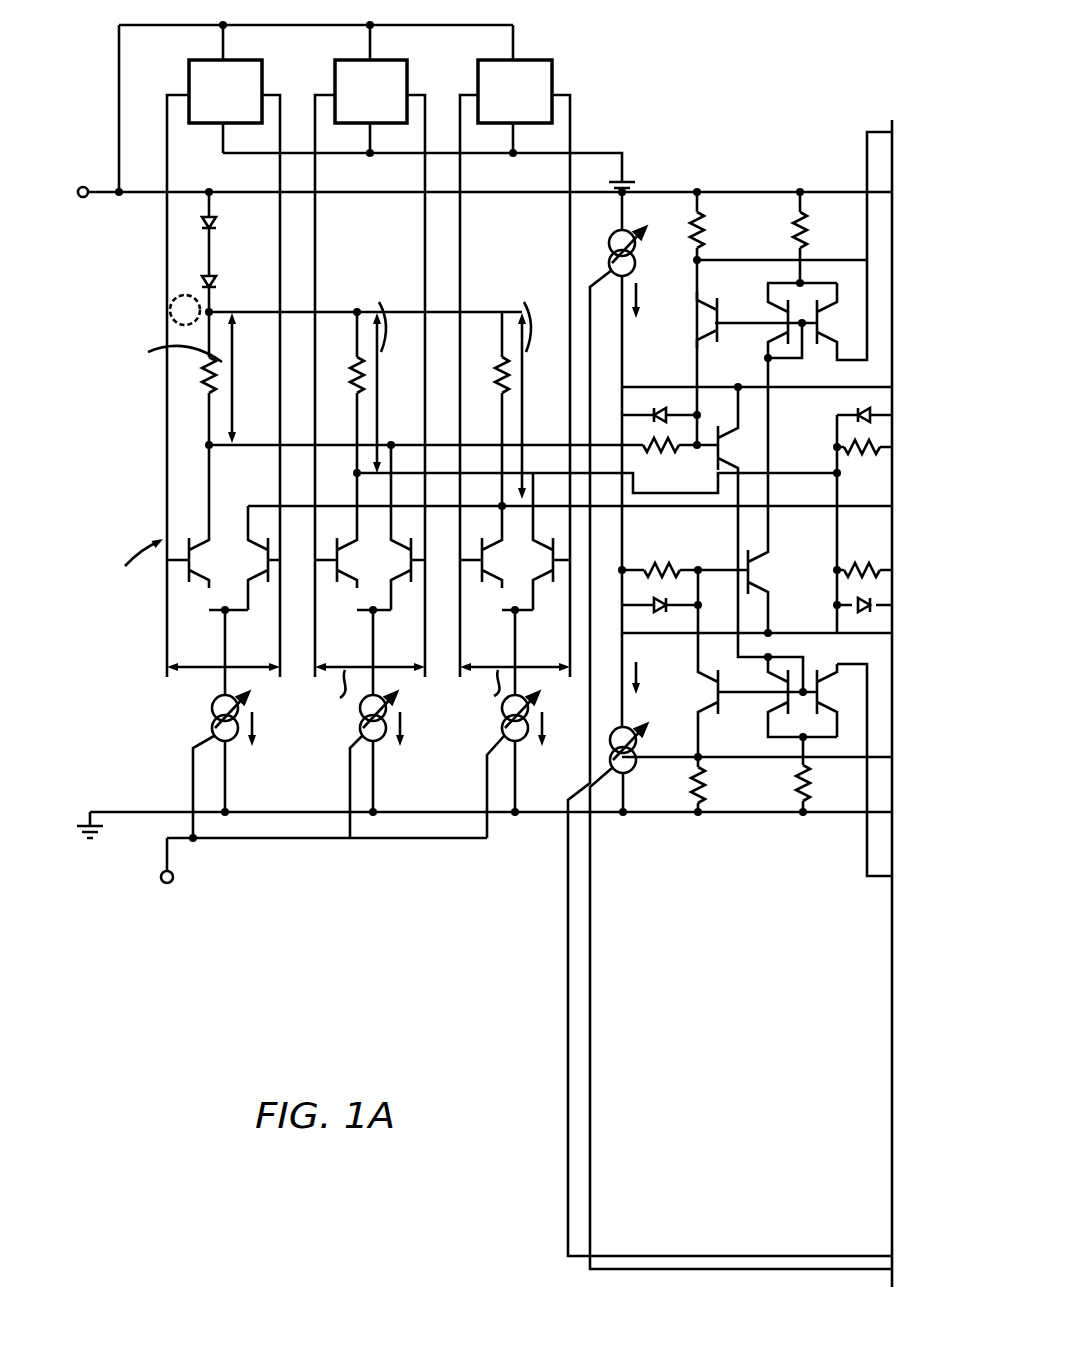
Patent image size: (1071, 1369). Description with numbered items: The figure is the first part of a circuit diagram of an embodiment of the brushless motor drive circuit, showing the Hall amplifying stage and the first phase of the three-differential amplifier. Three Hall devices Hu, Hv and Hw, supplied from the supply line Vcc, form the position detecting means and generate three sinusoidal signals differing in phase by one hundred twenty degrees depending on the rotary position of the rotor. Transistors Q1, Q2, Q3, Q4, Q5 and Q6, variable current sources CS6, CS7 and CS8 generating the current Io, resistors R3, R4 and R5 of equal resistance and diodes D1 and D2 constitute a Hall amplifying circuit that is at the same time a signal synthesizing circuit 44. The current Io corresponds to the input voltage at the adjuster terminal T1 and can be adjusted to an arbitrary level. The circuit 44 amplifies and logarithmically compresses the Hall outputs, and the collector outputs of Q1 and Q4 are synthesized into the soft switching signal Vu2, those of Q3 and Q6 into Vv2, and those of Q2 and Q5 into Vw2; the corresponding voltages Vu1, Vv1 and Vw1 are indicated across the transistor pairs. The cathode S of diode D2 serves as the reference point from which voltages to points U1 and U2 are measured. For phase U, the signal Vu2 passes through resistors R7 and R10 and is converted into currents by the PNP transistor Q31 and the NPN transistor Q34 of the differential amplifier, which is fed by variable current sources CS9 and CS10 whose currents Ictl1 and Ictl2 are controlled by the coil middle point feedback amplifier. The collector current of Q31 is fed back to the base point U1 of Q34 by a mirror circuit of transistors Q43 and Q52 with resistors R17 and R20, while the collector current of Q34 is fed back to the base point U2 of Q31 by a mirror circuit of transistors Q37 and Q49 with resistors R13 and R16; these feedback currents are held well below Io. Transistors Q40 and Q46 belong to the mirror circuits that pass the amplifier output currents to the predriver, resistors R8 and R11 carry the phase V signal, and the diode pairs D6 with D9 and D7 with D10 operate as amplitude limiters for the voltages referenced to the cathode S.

The supply voltage terminal Vcc is at (76, 175).
The Hall device Hu is at (225, 91).
The Hall device Hv is at (371, 91).
The Hall device Hw is at (515, 91).
The diode D1 is at (228, 234).
The diode D2 is at (230, 292).
The cathode of the diode D2 S is at (185, 310).
The resistor R3 is at (193, 422).
The resistor R4 is at (341, 422).
The resistor R5 is at (486, 422).
The soft switching signal Vu2 is at (164, 378).
The soft switching signal Vv2 is at (366, 373).
The soft switching signal Vw2 is at (520, 386).
The U phase voltage Vu1 is at (223, 651).
The V phase voltage Vv1 is at (357, 689).
The W phase voltage Vw1 is at (504, 688).
The transistor Q1 is at (190, 548).
The transistor Q2 is at (246, 560).
The transistor Q3 is at (337, 548).
The transistor Q4 is at (391, 560).
The transistor Q5 is at (484, 551).
The transistor Q6 is at (537, 560).
The signal synthesizing circuit 44 is at (125, 561).
The variable current source CS6 is at (238, 724).
The variable current source CS7 is at (391, 724).
The variable current source CS8 is at (528, 724).
The variable current source CS9 is at (609, 459).
The variable current source CS10 is at (652, 768).
The electric current Io is at (412, 730).
The adjuster terminal T1 is at (166, 900).
The current Ictl1 is at (665, 302).
The current Ictl2 is at (662, 681).
The resistor R16 is at (718, 318).
The resistor R13 is at (824, 237).
The transistor Q49 is at (681, 323).
The transistor Q37 is at (752, 316).
The transistor Q40 is at (840, 322).
The PNP-type transistor Q31 is at (743, 448).
The diode D6 is at (653, 404).
The diode D7 is at (853, 404).
The resistor R7 is at (661, 461).
The point U2 is at (698, 471).
The resistor R8 is at (864, 462).
The resistor R10 is at (685, 558).
The point U1 is at (711, 556).
The NPN-type transistor Q34 is at (781, 572).
The resistor R11 is at (864, 558).
The diode D9 is at (655, 618).
The diode D10 is at (858, 618).
The transistor Q43 is at (752, 692).
The transistor Q46 is at (844, 692).
The transistor Q52 is at (726, 705).
The resistor R20 is at (672, 784).
The resistor R17 is at (779, 774).